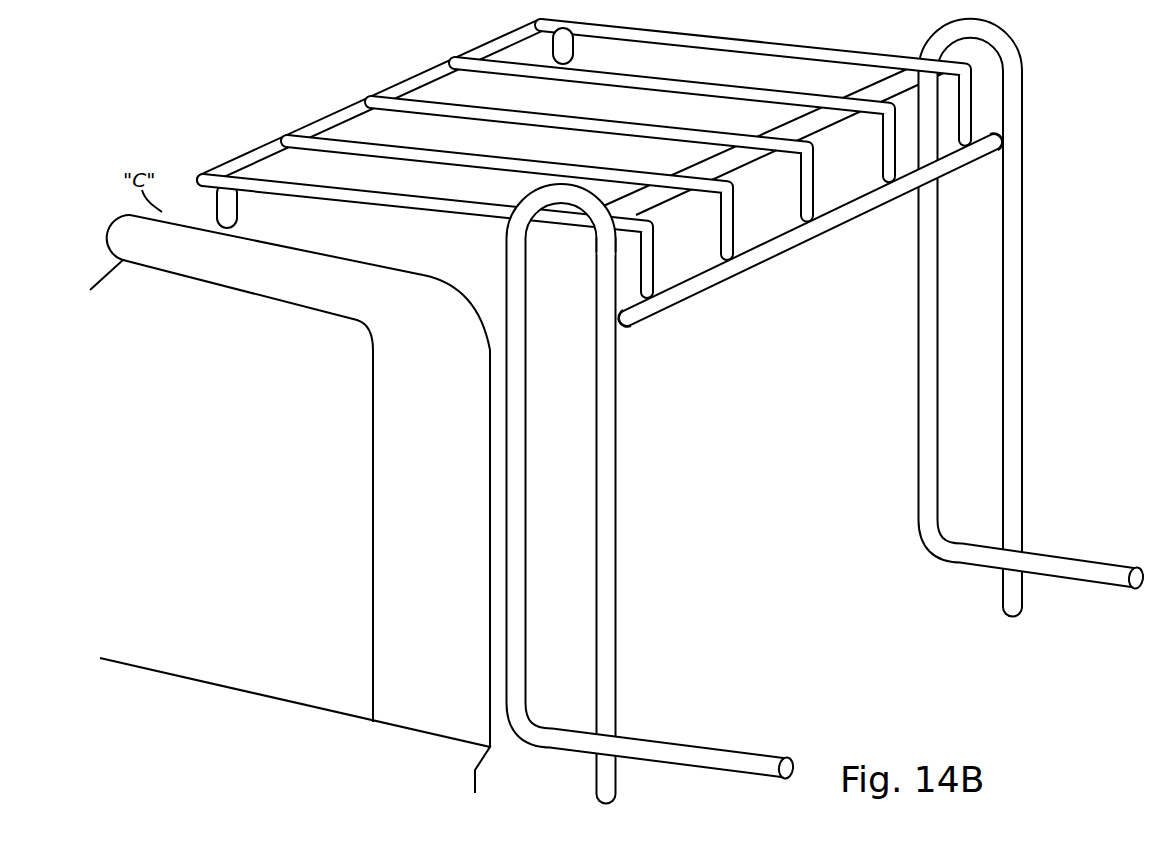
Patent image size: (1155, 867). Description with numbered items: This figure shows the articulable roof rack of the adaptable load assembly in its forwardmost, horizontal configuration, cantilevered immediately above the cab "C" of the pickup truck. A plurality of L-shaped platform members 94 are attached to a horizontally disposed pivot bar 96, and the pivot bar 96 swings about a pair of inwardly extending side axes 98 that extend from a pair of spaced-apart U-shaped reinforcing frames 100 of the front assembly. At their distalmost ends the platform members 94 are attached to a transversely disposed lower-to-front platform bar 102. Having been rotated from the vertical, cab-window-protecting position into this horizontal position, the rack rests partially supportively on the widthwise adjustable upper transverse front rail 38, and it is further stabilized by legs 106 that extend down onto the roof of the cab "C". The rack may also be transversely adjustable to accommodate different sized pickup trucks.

The front rail 38 is at (722, 155).
The platform members 94 is at (673, 409).
The pivot bar 96 is at (778, 242).
The side axes 98 is at (628, 320).
The U-shaped reinforcing frames 100 is at (607, 420).
The platform bar 102 is at (432, 72).
The legs 106 is at (233, 205).